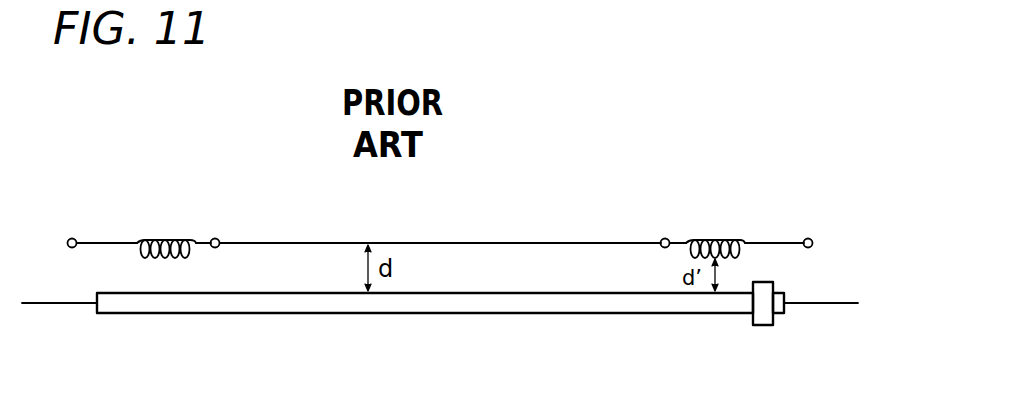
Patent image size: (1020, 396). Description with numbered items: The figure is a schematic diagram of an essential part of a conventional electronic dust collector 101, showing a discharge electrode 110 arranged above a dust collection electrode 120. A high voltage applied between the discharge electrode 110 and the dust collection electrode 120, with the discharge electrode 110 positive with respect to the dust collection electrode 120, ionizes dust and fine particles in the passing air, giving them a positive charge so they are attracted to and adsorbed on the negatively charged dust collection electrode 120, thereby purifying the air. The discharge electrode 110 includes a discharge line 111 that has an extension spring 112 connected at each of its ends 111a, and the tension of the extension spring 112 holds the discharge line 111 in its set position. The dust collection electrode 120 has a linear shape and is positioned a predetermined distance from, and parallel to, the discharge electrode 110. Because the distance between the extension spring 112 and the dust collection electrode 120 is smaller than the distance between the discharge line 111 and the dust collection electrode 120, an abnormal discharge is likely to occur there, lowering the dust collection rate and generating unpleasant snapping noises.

The conventional electronic dust collector 101 is at (207, 150).
The discharge electrode 110 is at (568, 236).
The discharge line 111 is at (491, 241).
The ends of the discharge line 111a is at (229, 241).
The extension spring 112 is at (160, 240).
The dust collection electrode 120 is at (474, 316).